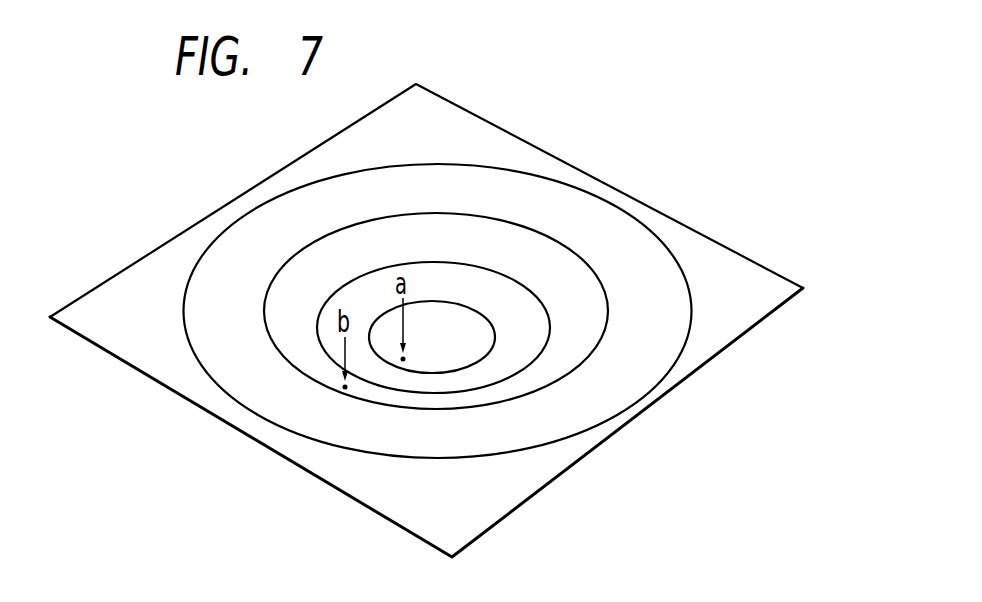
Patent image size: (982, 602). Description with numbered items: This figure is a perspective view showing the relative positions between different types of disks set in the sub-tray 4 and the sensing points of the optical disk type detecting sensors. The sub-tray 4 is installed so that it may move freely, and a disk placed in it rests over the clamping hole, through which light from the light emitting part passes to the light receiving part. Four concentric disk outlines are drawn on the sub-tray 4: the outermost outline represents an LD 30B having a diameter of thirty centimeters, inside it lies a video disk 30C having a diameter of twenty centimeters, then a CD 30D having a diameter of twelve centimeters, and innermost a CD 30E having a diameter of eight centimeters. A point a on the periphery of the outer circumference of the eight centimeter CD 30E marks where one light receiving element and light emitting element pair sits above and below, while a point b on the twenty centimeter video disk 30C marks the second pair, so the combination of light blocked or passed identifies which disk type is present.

The sub-tray 4 is at (707, 240).
The LD having a diameter of 30 cm 30B is at (448, 448).
The video disk having a diameter of 20 cm 30C is at (507, 393).
The CD having a diameter of 12 cm 30D is at (530, 358).
The CD having a diameter of 8 cm 30E is at (497, 337).